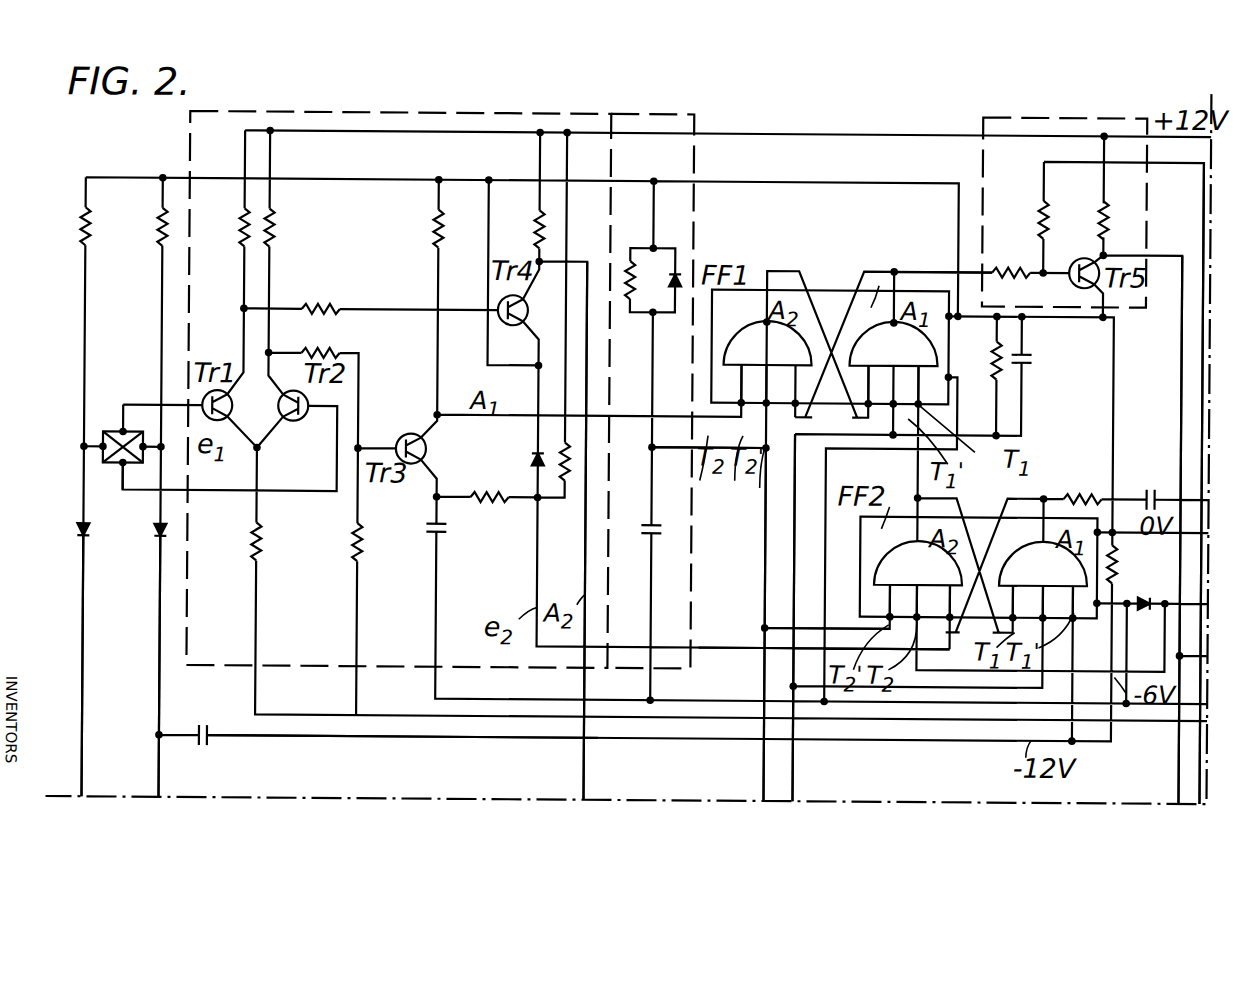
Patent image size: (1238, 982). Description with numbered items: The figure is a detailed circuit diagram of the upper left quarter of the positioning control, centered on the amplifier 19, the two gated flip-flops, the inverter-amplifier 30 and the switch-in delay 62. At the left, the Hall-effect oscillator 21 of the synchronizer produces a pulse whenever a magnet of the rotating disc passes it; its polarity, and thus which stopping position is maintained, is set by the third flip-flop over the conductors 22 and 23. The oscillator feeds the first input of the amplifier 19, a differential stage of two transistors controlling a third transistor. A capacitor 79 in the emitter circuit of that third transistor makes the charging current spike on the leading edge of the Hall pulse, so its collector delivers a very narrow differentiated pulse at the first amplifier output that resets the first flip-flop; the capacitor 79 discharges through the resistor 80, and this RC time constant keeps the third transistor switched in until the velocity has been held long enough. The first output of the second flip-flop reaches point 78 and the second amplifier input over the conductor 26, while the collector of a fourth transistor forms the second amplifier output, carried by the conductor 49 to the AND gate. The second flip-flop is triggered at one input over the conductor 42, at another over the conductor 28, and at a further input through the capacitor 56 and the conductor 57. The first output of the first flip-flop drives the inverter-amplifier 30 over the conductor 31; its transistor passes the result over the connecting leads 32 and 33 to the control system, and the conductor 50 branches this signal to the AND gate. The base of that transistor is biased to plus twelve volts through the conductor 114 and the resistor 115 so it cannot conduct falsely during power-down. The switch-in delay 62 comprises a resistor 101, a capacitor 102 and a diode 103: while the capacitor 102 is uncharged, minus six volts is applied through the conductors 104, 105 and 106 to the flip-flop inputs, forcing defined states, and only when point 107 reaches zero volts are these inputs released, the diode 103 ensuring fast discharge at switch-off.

The amplifier 19 is at (244, 113).
The fixed element 21 is at (122, 434).
The conductor 22 is at (85, 765).
The conductor 23 is at (162, 765).
The conductor 26 is at (753, 629).
The conductor 28 is at (796, 765).
The inverter-amplifier 30 is at (983, 116).
The conductor 31 is at (948, 269).
The connecting lead 32 is at (1180, 453).
The connecting lead 33 is at (1180, 650).
The conductor 42 is at (1176, 578).
The conductor 49 is at (585, 777).
The conductor 50 is at (1180, 752).
The capacitor 56 is at (210, 738).
The conductor 57 is at (954, 747).
The switch-in delay 62 is at (690, 115).
The point 78 is at (536, 500).
The capacitor 79 is at (440, 533).
The resistor 80 is at (493, 478).
The resistor 101 is at (643, 254).
The capacitor 102 is at (660, 533).
The diode 103 is at (683, 268).
The conductor 104 is at (762, 450).
The conductor 105 is at (820, 635).
The conductor 106 is at (763, 777).
The point 107 is at (653, 450).
The conductor 114 is at (1201, 774).
The resistor 115 is at (1040, 220).